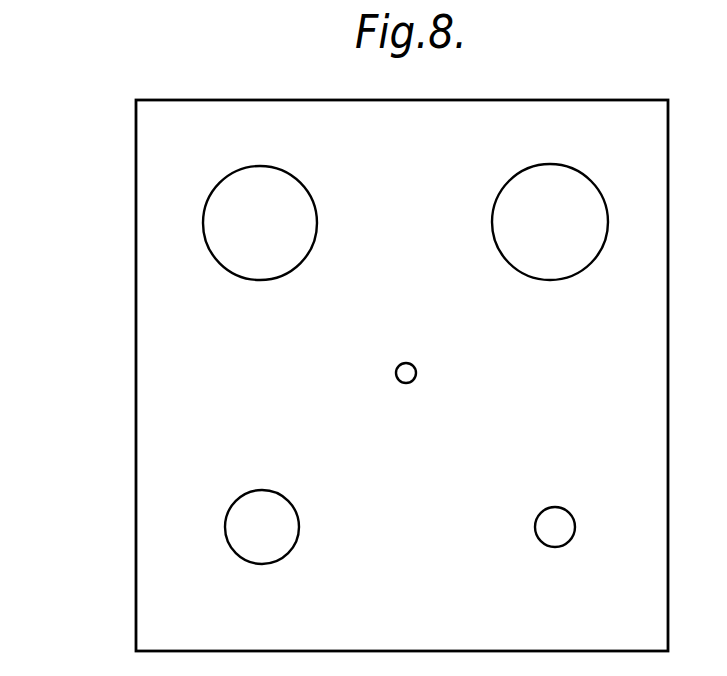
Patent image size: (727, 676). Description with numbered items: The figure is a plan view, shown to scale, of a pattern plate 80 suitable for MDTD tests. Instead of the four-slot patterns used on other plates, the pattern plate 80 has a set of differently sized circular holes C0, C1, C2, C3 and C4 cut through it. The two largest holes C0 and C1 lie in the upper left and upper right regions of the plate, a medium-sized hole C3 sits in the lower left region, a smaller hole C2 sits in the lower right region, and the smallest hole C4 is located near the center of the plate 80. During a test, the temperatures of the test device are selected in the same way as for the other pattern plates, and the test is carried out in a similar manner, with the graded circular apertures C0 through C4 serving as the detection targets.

The pattern plate 80 is at (113, 144).
The circular hole C0 is at (278, 203).
The circular hole C1 is at (580, 195).
The circular hole C2 is at (562, 523).
The circular hole C3 is at (277, 518).
The circular hole C4 is at (407, 370).